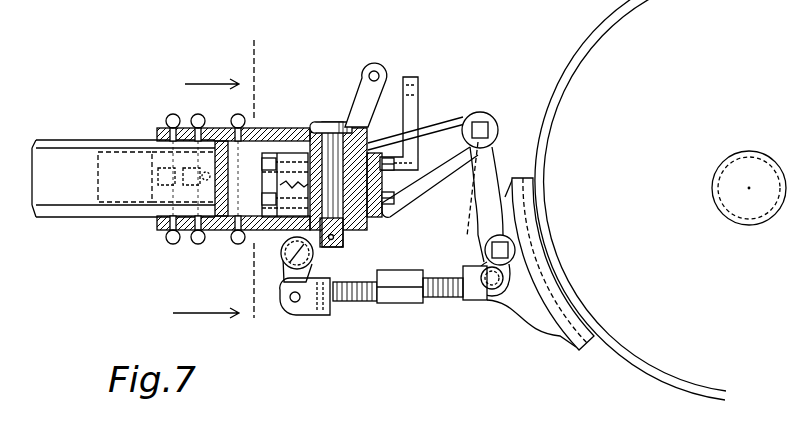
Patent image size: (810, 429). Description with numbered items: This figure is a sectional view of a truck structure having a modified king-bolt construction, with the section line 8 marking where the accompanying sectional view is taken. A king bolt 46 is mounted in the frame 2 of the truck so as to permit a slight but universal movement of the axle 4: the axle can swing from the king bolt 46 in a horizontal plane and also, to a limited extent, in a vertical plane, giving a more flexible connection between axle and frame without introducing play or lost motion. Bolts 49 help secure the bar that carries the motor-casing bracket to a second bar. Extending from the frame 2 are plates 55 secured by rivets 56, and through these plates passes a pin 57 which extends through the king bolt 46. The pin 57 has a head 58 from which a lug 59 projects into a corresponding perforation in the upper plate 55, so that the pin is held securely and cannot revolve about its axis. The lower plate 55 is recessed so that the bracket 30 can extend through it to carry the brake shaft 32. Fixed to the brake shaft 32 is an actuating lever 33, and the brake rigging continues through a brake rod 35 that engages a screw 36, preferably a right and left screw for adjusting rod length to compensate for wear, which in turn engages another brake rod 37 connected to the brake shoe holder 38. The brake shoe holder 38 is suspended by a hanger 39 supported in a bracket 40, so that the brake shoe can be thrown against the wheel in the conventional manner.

The frame 2 is at (123, 178).
The axle 4 is at (737, 214).
The section line 8— 8 is at (218, 180).
The central bracket 30 is at (272, 257).
The brake shaft 32 is at (286, 262).
The actuating lever 33 is at (377, 84).
The brake rod 35 is at (312, 317).
The screw 36 is at (424, 305).
The brake rod 37 is at (472, 300).
The brake shoe holder 38 is at (574, 340).
The hanger 39 is at (480, 198).
The bracket 40 is at (497, 115).
The king bolt 46 is at (272, 185).
The bolts 49 is at (405, 179).
The plates 55 is at (280, 128).
The rivets 56 is at (230, 120).
The pin 57 is at (342, 118).
The head 58 is at (325, 122).
The lug 59 is at (310, 125).